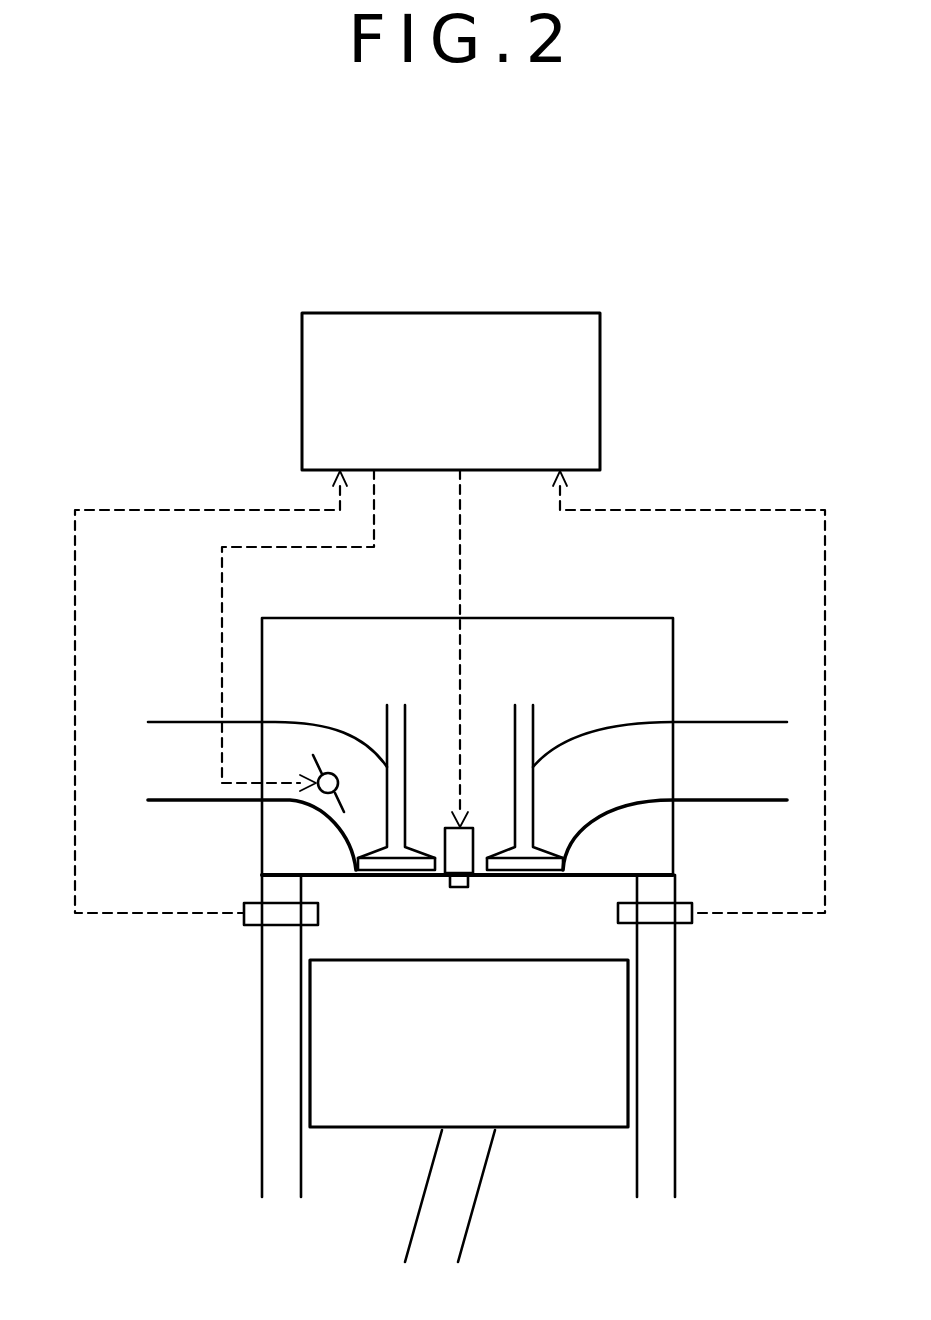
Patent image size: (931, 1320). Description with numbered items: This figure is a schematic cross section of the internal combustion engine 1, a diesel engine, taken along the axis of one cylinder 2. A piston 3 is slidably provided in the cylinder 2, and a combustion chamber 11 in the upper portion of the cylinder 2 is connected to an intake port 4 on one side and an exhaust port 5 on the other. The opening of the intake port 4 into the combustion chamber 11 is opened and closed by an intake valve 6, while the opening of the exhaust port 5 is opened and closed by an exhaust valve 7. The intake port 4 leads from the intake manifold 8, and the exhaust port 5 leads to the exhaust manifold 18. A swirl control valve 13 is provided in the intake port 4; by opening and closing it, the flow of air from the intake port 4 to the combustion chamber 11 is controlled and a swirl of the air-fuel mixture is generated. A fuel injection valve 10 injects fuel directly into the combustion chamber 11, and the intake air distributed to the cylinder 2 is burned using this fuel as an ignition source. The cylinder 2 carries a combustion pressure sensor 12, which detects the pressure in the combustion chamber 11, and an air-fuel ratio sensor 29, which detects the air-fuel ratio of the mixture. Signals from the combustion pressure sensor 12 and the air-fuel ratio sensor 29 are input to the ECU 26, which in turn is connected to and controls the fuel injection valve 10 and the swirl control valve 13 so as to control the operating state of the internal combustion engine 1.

The internal combustion engine 1 is at (658, 583).
The cylinder 2 is at (628, 1130).
The piston 3 is at (310, 1015).
The intake port 4 is at (275, 720).
The exhaust port 5 is at (652, 720).
The intake valve 6 is at (373, 733).
The exhaust valve 7 is at (538, 746).
The intake manifold 8 is at (190, 720).
The fuel injection valve 10 is at (482, 828).
The combustion chamber 11 is at (598, 948).
The combustion pressure sensor 12 is at (692, 920).
The swirl control valve 13 is at (320, 798).
The exhaust manifold 18 is at (710, 720).
The ECU 26 is at (600, 387).
The air-fuel ratio sensor 29 is at (243, 922).